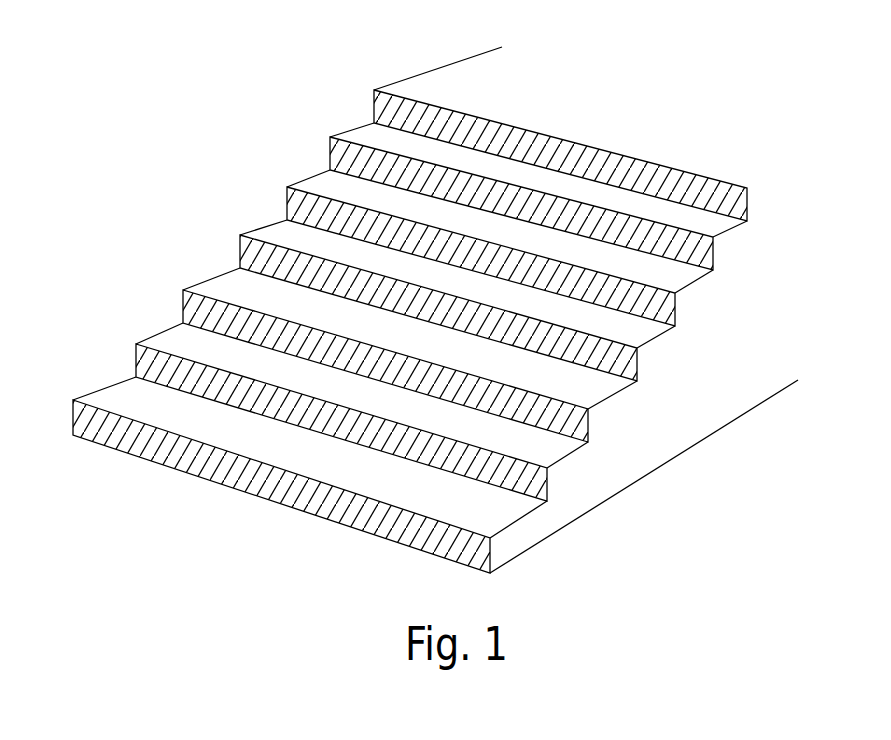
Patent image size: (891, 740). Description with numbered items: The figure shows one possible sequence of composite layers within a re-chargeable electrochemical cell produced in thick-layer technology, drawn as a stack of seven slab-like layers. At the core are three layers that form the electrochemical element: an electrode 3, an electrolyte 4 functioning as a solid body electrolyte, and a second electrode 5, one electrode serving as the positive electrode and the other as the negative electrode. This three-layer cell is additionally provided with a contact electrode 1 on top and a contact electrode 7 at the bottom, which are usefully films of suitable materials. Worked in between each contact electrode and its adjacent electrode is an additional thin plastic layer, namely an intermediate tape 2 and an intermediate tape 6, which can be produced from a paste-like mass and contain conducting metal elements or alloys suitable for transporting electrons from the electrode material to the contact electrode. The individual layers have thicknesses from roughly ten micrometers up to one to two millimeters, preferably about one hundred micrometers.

The contact electrode 1 is at (747, 188).
The intermediate tape 2 is at (747, 221).
The electrode 3 is at (713, 270).
The electrolyte 4 is at (675, 326).
The electrode 5 is at (637, 381).
The intermediate tape 6 is at (588, 442).
The contact electrode 7 is at (547, 501).